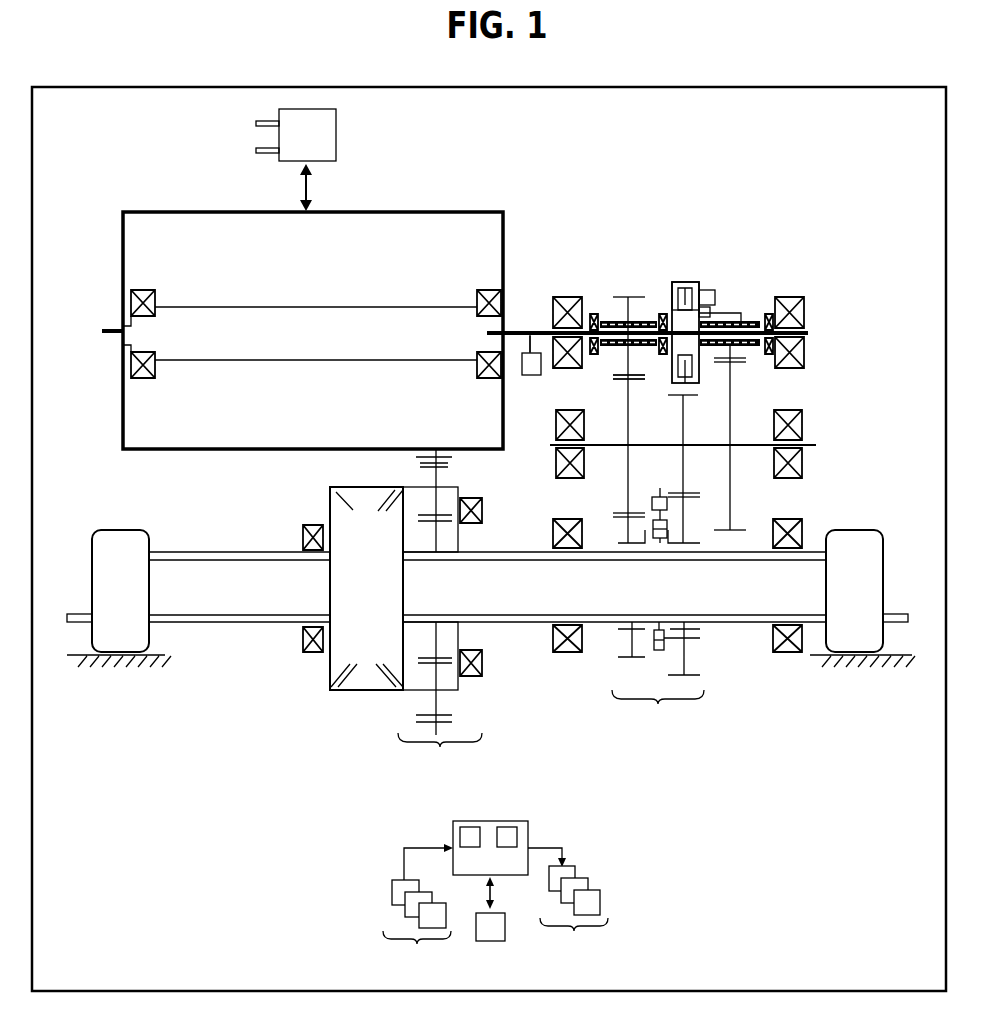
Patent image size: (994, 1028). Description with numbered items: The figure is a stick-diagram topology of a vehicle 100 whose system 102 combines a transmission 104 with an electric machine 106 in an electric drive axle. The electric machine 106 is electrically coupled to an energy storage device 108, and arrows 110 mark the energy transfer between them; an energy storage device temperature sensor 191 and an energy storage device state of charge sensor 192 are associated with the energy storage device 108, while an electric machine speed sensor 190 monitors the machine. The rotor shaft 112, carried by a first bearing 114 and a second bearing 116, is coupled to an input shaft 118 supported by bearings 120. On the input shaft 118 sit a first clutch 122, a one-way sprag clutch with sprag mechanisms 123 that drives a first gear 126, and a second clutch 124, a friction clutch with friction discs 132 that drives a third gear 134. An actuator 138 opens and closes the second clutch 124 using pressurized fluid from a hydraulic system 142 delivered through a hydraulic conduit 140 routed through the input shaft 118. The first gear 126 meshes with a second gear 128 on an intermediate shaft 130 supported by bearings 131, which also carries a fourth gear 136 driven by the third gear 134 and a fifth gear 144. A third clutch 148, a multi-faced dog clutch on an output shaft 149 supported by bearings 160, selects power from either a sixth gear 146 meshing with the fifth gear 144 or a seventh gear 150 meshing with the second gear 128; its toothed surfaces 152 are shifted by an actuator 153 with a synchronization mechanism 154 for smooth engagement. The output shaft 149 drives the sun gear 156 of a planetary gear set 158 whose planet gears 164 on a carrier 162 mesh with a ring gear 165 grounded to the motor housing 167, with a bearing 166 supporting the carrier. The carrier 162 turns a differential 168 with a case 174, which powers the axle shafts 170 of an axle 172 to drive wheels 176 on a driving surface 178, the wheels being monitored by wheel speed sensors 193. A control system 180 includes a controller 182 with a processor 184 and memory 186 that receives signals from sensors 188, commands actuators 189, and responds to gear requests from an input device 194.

The vehicle 100 is at (37, 88).
The system 102 is at (131, 136).
The transmission 104 is at (884, 230).
The electric machine 106 is at (123, 242).
The energy storage device 108 is at (336, 136).
The arrows 110 is at (311, 187).
The rotor shaft 112 is at (285, 306).
The first bearing 114 is at (148, 289).
The second bearing 116 is at (487, 289).
The input shaft 118 is at (522, 329).
The bearings 120 is at (567, 296).
The first clutch 122 is at (623, 280).
The sprag mechanisms 123 is at (617, 319).
The second clutch 124 is at (684, 262).
The first gear 126 is at (624, 362).
The second gear 128 is at (630, 431).
The intermediate shaft 130 is at (814, 442).
The bearings 131 is at (556, 425).
The friction discs 132 is at (698, 283).
The third gear 134 is at (742, 313).
The fourth gear 136 is at (748, 389).
The actuator 138 is at (716, 296).
The hydraulic conduit 140 is at (524, 347).
The hydraulic system 142 is at (540, 375).
The fifth gear 144 is at (684, 433).
The sixth gear 146 is at (688, 531).
The third clutch 148 is at (658, 708).
The output shaft 149 is at (758, 551).
The seventh gear 150 is at (623, 529).
The toothed surfaces 152 is at (650, 637).
The actuator 153 is at (660, 495).
The synchronization mechanism 154 is at (658, 652).
The sun gear 156 is at (438, 538).
The planetary gear set 158 is at (440, 751).
The bearings 160 is at (310, 524).
The carrier 162 is at (452, 690).
The planet gears 164 is at (438, 470).
The ring gear 165 is at (418, 721).
The bearing 166 is at (484, 668).
The motor housing 167 is at (380, 450).
The differential 168 is at (337, 705).
The axle shafts 170 is at (221, 551).
The axle 172 is at (186, 505).
The case 174 is at (331, 684).
The drive wheels 176 is at (91, 560).
The driving surface 178 is at (86, 654).
The control system 180 is at (626, 833).
The controller 182 is at (458, 820).
The processor 184 is at (460, 832).
The memory 186 is at (517, 832).
The sensors 188 is at (418, 907).
The actuators 189 is at (568, 900).
The electric machine speed sensor 190 is at (113, 328).
The energy storage device temperature sensor 191 is at (263, 120).
The energy storage device state of charge sensor 192 is at (263, 148).
The wheel speed sensors 193 is at (84, 613).
The input device 194 is at (491, 928).